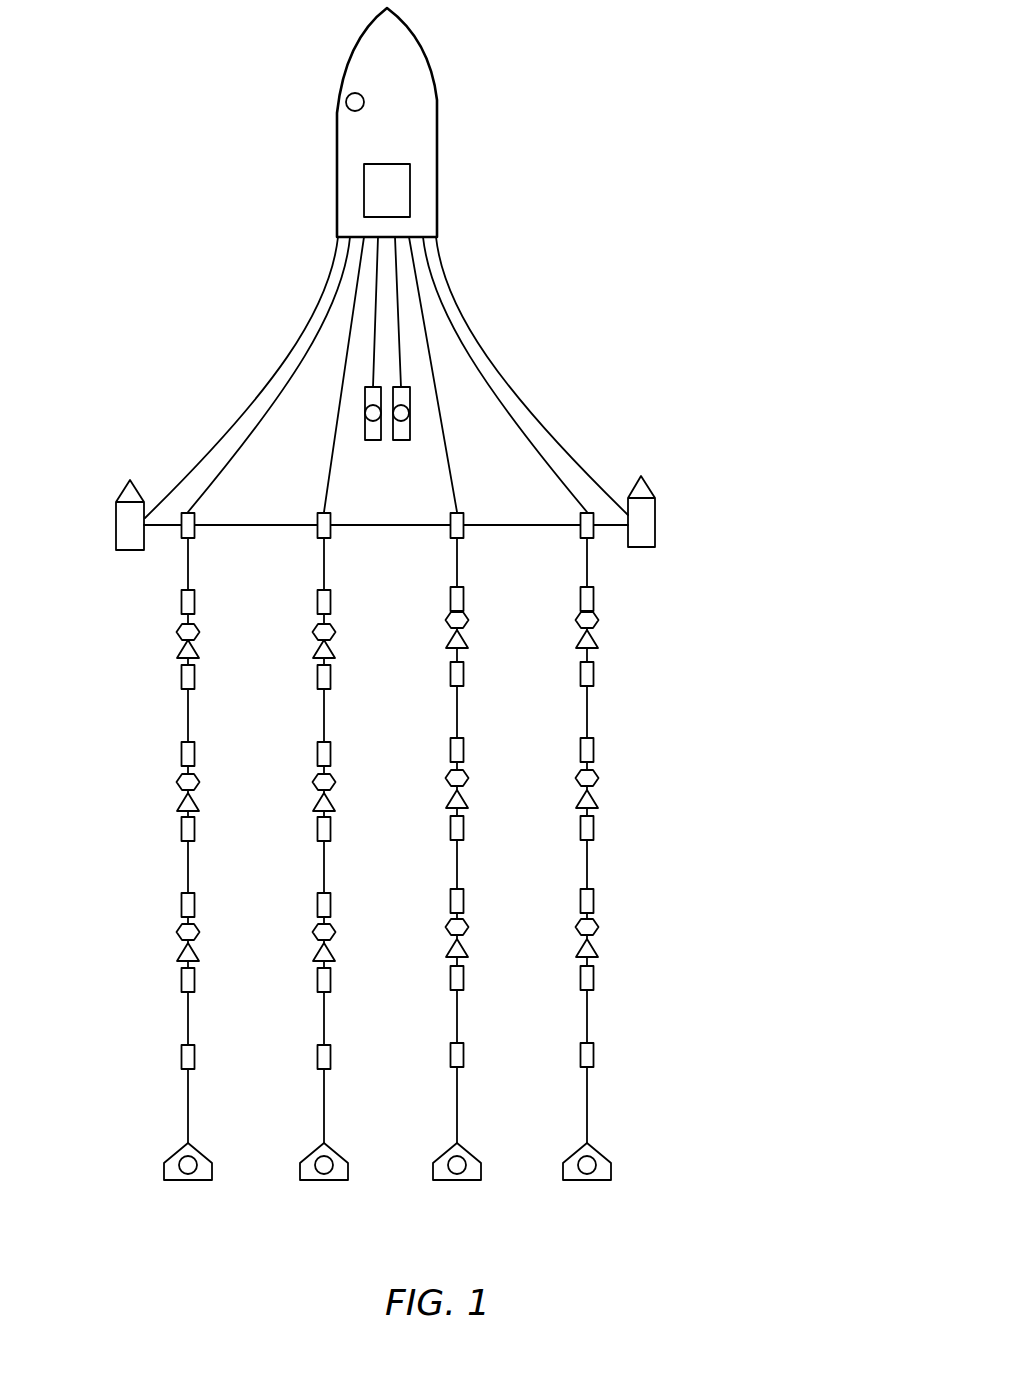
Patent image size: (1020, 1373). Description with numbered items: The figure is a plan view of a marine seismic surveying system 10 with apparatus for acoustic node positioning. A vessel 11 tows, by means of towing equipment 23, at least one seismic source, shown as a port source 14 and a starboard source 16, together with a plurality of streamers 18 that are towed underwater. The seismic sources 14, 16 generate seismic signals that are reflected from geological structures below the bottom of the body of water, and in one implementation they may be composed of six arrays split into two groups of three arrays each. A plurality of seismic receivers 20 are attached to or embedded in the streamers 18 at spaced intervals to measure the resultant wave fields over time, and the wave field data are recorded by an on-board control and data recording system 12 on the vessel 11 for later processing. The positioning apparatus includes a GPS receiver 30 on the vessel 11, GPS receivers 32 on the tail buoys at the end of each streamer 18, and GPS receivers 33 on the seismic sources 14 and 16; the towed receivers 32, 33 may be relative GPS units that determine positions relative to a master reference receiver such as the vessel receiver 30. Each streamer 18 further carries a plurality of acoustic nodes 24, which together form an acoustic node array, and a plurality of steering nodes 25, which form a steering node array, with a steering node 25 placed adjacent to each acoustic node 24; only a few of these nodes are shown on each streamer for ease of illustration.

The marine seismic surveying system 10 is at (736, 1089).
The vessel 11 is at (438, 108).
The on-board control and data recording system 12 is at (387, 190).
The port source 14 is at (373, 441).
The starboard source 16 is at (401, 441).
The streamer 18 is at (188, 563).
The seismic receiver 20 is at (313, 512).
The towing equipment 23 is at (678, 547).
The acoustic node 24 is at (176, 632).
The steering node 25 is at (179, 650).
The GPS receiver 30 is at (346, 103).
The GPS receiver on tail buoy 32 is at (186, 1166).
The GPS receiver on seismic source 33 is at (365, 410).